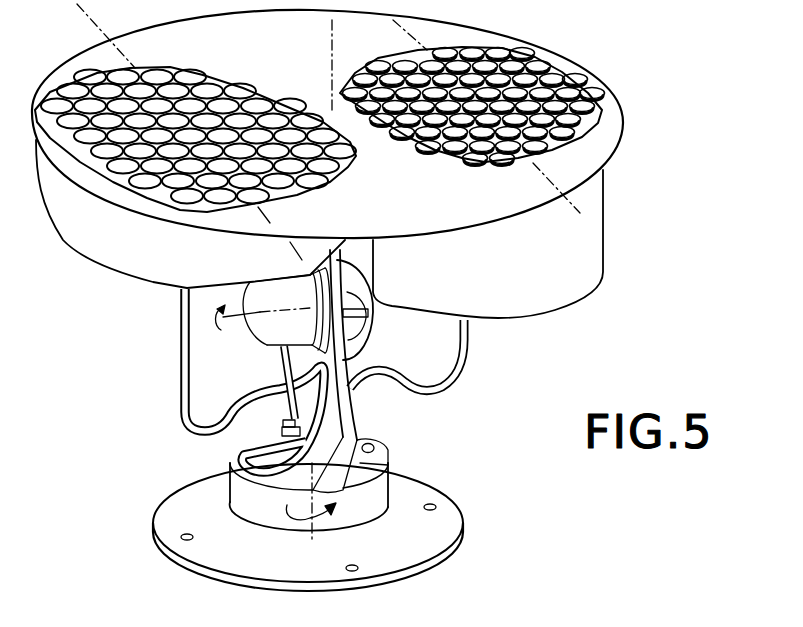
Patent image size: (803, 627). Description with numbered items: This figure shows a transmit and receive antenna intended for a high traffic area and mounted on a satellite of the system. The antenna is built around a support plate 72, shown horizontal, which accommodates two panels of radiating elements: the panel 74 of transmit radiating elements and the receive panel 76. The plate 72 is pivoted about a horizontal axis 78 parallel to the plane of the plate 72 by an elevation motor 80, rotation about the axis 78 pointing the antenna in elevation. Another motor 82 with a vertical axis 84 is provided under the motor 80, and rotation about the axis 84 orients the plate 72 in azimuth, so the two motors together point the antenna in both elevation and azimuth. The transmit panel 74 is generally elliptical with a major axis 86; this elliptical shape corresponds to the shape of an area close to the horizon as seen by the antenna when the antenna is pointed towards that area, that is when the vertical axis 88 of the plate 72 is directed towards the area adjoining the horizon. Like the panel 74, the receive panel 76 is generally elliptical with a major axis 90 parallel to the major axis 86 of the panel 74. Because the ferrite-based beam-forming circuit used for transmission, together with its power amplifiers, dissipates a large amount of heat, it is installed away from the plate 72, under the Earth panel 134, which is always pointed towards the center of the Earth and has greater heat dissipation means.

The plate 72 is at (583, 163).
The panel of transmit radiating elements 74 is at (215, 68).
The receive panel 76 is at (547, 55).
The horizontal axis 78 is at (200, 321).
The elevation motor 80 is at (270, 330).
The motor 82 is at (374, 422).
The vertical axis 84 is at (288, 507).
The major axis 86 is at (267, 213).
The vertical axis of the plate 88 is at (330, 44).
The major axis 90 is at (543, 170).
The Earth panel 134 is at (432, 537).